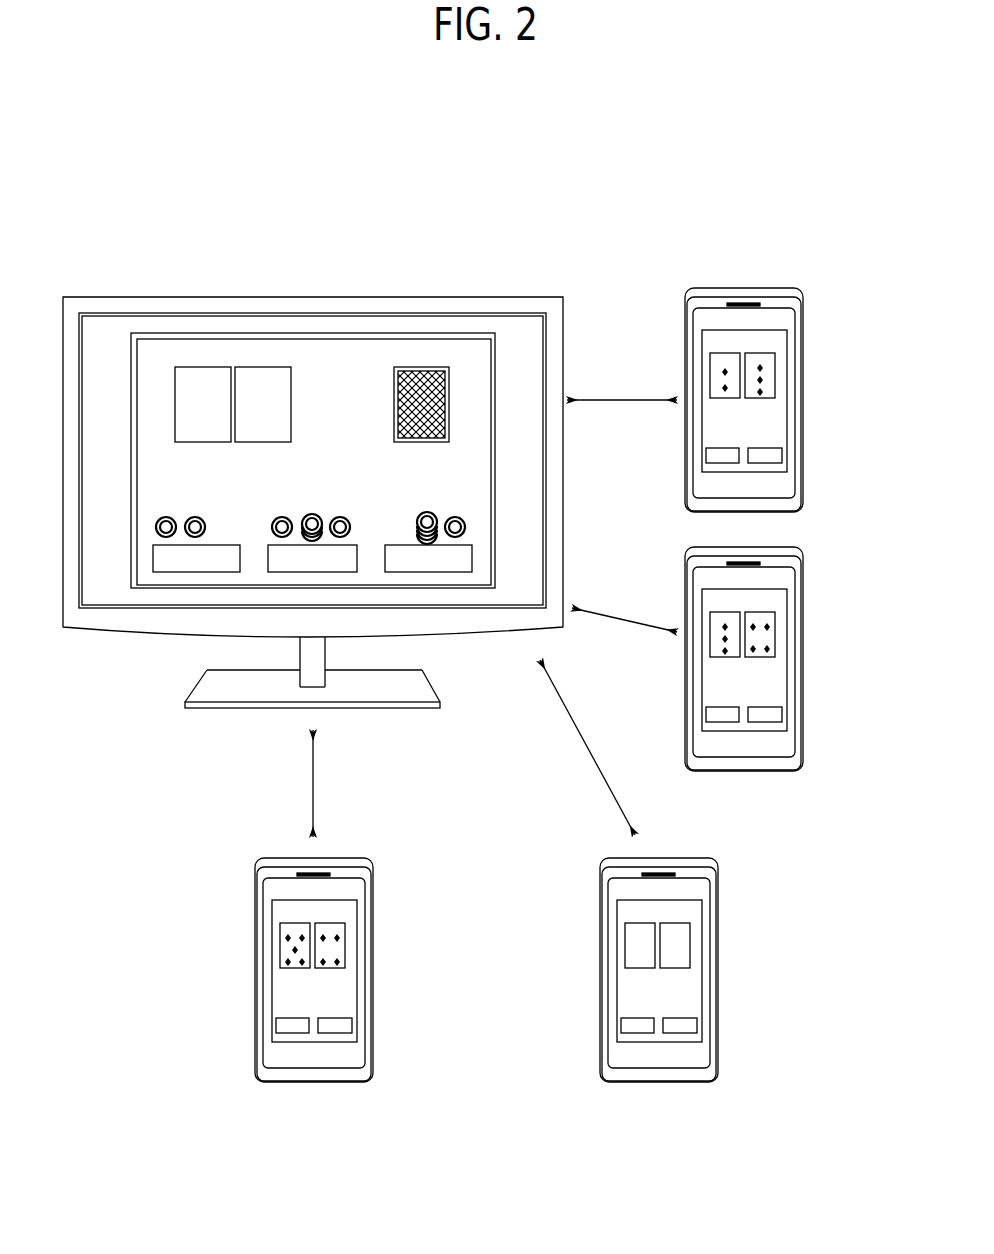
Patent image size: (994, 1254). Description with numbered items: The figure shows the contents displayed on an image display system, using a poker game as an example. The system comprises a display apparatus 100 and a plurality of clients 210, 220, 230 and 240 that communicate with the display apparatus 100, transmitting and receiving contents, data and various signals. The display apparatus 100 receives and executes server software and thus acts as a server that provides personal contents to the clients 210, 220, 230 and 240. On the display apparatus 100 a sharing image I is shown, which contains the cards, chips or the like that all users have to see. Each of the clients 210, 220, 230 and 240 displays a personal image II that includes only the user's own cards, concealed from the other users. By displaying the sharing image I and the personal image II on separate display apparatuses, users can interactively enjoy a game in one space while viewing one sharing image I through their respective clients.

The display apparatus 100 is at (377, 291).
The client 210 is at (822, 350).
The client 220 is at (797, 659).
The client 230 is at (712, 970).
The client 240 is at (367, 970).
The sharing image I is at (193, 335).
The personal image II is at (789, 419).